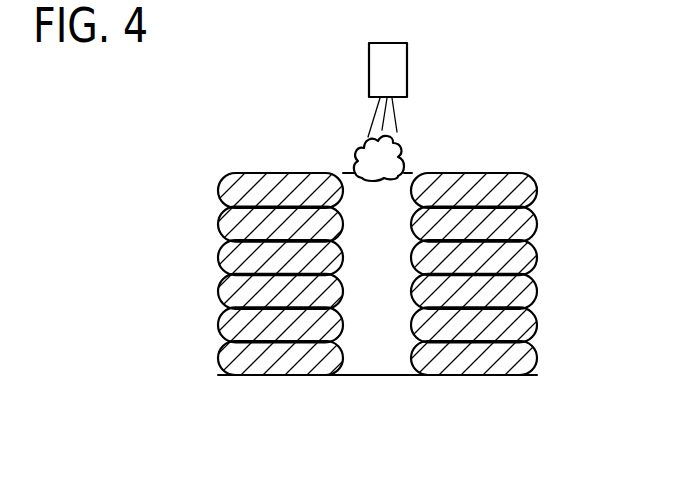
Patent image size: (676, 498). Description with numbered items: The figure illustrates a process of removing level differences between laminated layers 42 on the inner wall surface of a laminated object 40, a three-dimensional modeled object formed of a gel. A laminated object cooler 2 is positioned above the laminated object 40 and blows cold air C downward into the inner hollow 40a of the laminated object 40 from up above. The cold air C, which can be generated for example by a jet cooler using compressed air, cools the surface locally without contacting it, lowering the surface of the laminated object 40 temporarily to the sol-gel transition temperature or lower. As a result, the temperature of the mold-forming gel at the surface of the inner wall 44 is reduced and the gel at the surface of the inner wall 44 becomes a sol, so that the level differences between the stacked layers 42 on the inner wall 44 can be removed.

The laminated object cooler 2 is at (369, 66).
The laminated object 40 is at (459, 54).
The inner hollow 40a is at (378, 358).
The layers 42 is at (538, 182).
The inner wall 44 is at (412, 325).
The cold air C is at (414, 140).